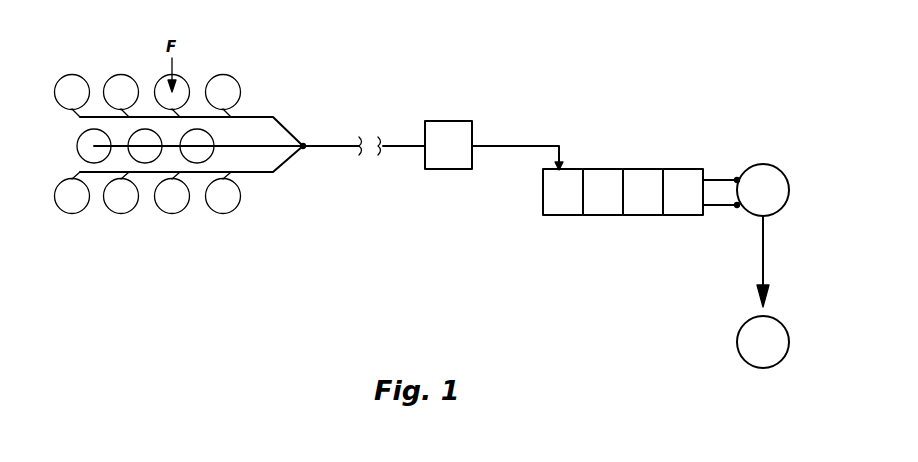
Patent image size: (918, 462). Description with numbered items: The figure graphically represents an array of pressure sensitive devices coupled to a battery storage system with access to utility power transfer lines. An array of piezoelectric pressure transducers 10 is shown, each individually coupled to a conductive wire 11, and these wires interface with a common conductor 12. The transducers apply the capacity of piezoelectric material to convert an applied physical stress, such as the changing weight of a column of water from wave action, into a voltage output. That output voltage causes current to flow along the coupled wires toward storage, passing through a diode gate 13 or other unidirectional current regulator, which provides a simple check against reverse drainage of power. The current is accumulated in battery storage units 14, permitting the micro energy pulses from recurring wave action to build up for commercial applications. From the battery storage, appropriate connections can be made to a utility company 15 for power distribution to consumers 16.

The piezoelectric pressure transducers 10 is at (200, 140).
The conductive wire 11 is at (289, 156).
The common conductor 12 is at (332, 143).
The diode gate 13 is at (447, 157).
The battery storage units 14 is at (605, 178).
The utility company 15 is at (770, 178).
The consumers 16 is at (748, 342).